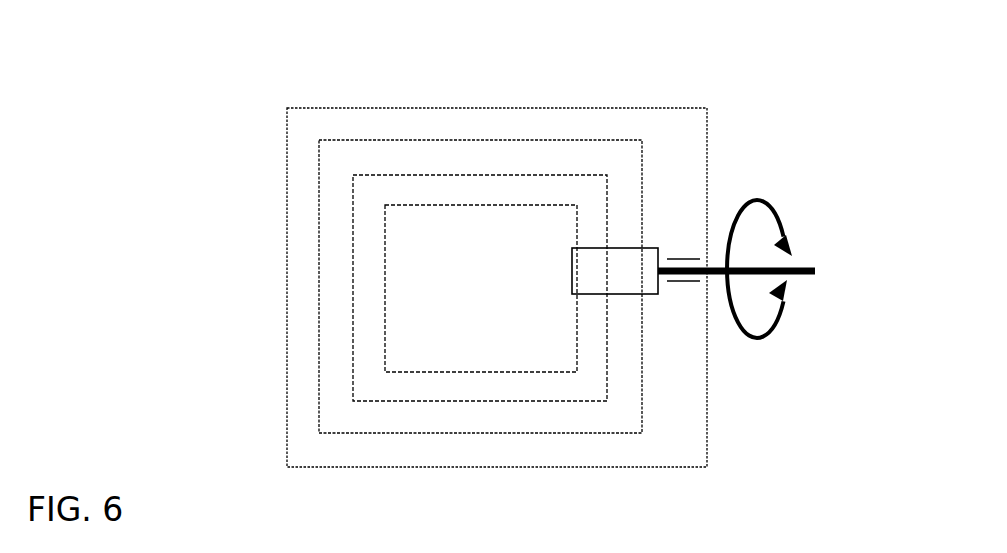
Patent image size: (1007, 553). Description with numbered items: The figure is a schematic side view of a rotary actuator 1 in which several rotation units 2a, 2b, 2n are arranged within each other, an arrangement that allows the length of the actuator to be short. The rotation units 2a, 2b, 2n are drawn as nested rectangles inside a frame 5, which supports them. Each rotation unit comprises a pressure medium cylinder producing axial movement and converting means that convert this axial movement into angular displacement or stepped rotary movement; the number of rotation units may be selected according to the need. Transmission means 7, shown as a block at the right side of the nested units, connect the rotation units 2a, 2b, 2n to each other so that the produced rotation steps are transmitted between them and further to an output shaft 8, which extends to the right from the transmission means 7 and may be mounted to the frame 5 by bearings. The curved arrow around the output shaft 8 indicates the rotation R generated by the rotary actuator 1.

The rotary actuator 1 is at (191, 74).
The frame 5 is at (325, 107).
The rotation unit 2a is at (384, 138).
The rotation unit 2b is at (457, 174).
The rotation unit 2n is at (535, 204).
The transmission means 7 is at (625, 247).
The output shaft 8 is at (807, 265).
The rotation R is at (770, 260).